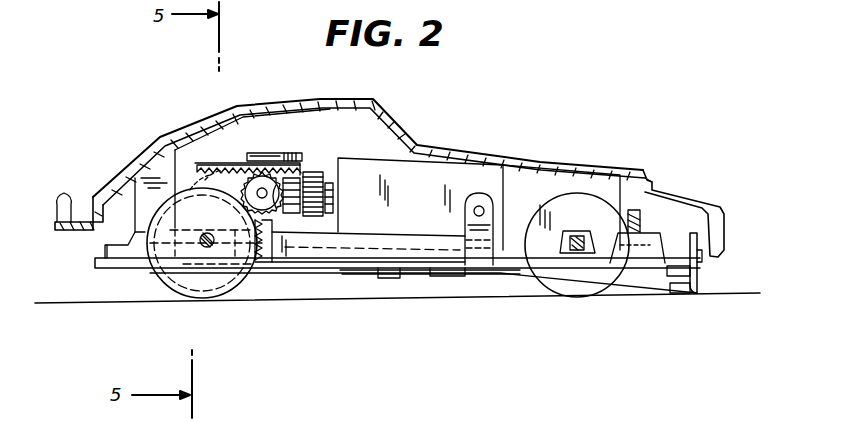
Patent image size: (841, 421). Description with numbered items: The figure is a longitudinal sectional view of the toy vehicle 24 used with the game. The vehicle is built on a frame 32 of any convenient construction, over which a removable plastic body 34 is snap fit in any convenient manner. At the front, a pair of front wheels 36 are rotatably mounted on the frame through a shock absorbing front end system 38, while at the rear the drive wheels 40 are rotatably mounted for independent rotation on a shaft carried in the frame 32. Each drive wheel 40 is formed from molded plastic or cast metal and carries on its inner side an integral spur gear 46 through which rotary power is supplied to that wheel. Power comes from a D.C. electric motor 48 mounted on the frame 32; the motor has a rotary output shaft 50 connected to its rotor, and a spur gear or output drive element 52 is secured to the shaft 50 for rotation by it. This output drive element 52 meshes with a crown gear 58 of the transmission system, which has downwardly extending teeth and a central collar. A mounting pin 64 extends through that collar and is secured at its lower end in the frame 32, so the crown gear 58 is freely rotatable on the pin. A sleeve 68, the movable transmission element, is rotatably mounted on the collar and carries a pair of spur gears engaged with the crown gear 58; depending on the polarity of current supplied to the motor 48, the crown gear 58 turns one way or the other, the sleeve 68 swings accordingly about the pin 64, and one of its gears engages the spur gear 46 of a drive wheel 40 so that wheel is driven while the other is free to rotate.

The toy vehicle 24 is at (598, 120).
The frame 32 is at (340, 262).
The body 34 is at (412, 132).
The front wheels 36 is at (577, 297).
The shock absorbing front end system 38 is at (706, 268).
The rear wheels 40 is at (187, 277).
The spur gear 46 is at (225, 190).
The electric motor 48 is at (443, 180).
The output shaft 50 is at (333, 200).
The output drive element 52 is at (320, 180).
The crown gear 58 is at (290, 177).
The mounting pin 64 is at (267, 157).
The sleeve 68 is at (277, 263).